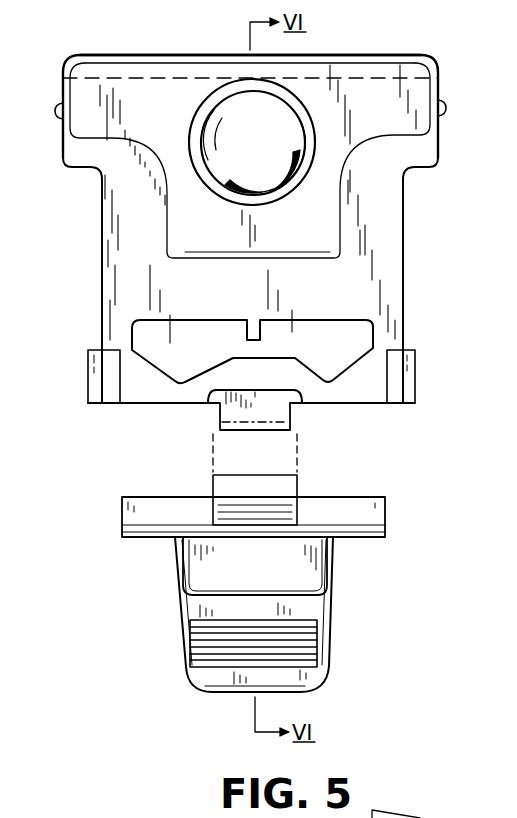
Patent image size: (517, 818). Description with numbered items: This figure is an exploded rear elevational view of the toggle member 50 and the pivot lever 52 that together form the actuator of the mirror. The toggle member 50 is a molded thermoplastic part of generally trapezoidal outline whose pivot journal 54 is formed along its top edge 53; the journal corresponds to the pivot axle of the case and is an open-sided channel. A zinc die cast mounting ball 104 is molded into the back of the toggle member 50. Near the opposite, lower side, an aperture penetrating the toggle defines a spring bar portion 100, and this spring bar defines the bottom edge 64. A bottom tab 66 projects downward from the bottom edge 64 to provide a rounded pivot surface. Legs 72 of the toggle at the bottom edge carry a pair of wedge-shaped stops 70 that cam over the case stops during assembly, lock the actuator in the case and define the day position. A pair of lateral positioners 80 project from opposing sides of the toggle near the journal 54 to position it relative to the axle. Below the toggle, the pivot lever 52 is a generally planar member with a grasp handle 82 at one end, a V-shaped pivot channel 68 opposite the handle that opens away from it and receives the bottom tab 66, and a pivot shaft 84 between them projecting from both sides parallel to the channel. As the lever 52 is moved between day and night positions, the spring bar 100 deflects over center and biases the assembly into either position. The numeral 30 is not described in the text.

The adjacent figure fragment 30 is at (478, 817).
The toggle member 50 is at (437, 211).
The pivot lever 52 is at (352, 569).
The top edge 53 is at (377, 56).
The pivot journal 54 is at (339, 56).
The bottom edge 64 is at (162, 406).
The bottom tab 66 is at (228, 413).
The pivot channel 68 is at (272, 471).
The stops 70 is at (415, 373).
The legs 72 is at (412, 342).
The lateral positioners 80 is at (57, 105).
The grasp handle 82 is at (320, 682).
The pivot shaft 84 is at (381, 511).
The spring bar portion 100 is at (360, 391).
The mounting ball 104 is at (217, 110).